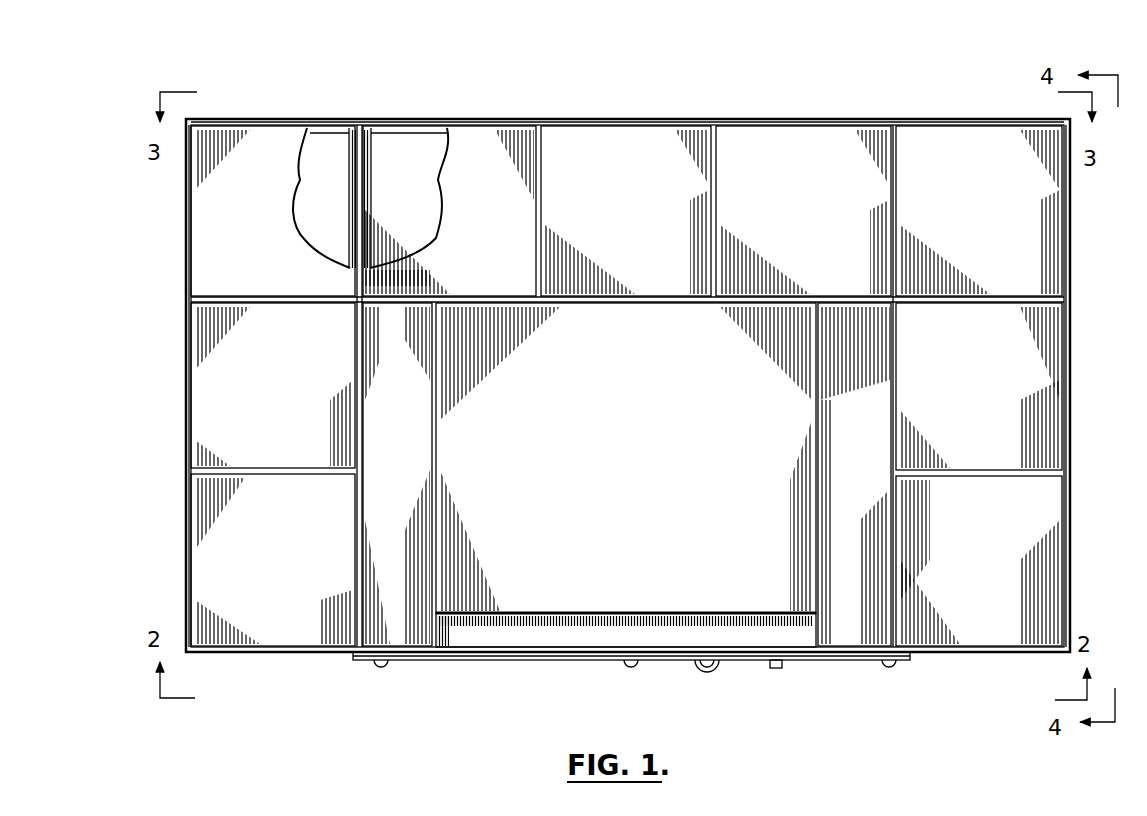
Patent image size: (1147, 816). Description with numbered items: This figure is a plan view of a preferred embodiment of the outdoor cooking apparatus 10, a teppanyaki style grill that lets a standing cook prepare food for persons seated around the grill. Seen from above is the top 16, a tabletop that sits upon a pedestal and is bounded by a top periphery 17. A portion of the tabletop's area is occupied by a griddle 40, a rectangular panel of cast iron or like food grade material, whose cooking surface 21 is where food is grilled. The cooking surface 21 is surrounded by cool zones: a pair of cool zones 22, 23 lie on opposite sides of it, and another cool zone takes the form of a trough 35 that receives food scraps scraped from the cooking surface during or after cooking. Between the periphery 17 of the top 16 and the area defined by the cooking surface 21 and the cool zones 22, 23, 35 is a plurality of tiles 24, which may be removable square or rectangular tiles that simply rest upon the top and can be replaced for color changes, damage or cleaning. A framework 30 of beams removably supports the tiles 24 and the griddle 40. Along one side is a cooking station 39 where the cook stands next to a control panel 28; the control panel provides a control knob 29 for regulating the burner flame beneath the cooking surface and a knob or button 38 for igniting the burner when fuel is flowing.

The outdoor cooking apparatus 10 is at (410, 98).
The top 16 is at (1070, 350).
The top periphery 17 is at (763, 116).
The cooking surface 21 is at (720, 386).
The cool zone 22 is at (411, 395).
The cool zone 23 is at (868, 395).
The tiles 24 is at (994, 577).
The control panel 28 is at (435, 662).
The control knob 29 is at (708, 676).
The framework 30 is at (838, 120).
The trough 35 is at (555, 634).
The knob or button 38 is at (781, 668).
The cooking station 39 is at (740, 684).
The griddle 40 is at (595, 620).